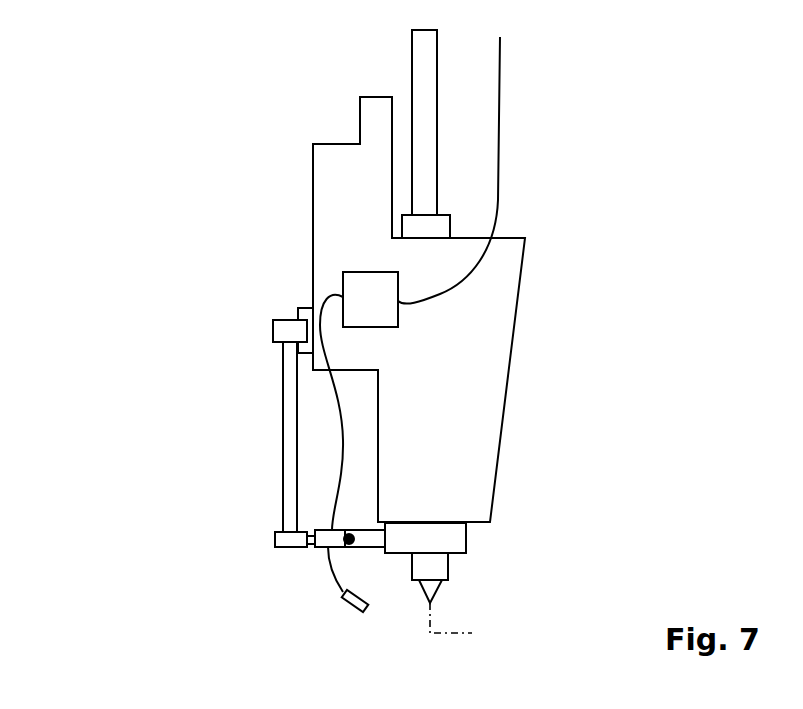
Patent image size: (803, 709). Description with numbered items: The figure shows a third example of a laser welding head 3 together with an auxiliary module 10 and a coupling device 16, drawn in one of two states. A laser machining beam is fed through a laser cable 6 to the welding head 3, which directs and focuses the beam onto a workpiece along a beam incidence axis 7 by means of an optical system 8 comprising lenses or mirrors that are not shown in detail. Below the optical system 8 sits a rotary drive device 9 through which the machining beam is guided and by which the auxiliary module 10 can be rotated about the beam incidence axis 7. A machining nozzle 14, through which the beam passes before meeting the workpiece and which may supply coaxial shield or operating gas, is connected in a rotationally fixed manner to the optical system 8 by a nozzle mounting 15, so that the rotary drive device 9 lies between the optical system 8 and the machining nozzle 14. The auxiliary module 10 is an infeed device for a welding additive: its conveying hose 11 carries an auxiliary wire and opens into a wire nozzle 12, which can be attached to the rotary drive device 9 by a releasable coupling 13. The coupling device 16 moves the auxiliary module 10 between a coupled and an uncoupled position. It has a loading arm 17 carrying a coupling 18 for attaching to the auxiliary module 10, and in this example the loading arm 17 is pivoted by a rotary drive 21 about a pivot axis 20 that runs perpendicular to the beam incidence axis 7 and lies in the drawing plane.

The laser welding head 3 is at (156, 92).
The laser cable 6 is at (425, 52).
The beam incidence axis 7 is at (460, 629).
The optical system 8 is at (477, 417).
The rotary drive device 9 is at (457, 534).
The auxiliary module 10 is at (233, 599).
The conveying hose 11 is at (500, 104).
The wire nozzle 12 is at (343, 600).
The releasable coupling 13 is at (333, 540).
The machining nozzle 14 is at (437, 587).
The nozzle mounting 15 is at (427, 572).
The coupling device 16 is at (128, 429).
The loading arm 17 is at (285, 408).
The coupling 18 is at (278, 533).
The pivot axis 20 is at (273, 330).
The rotary drive 21 is at (297, 320).